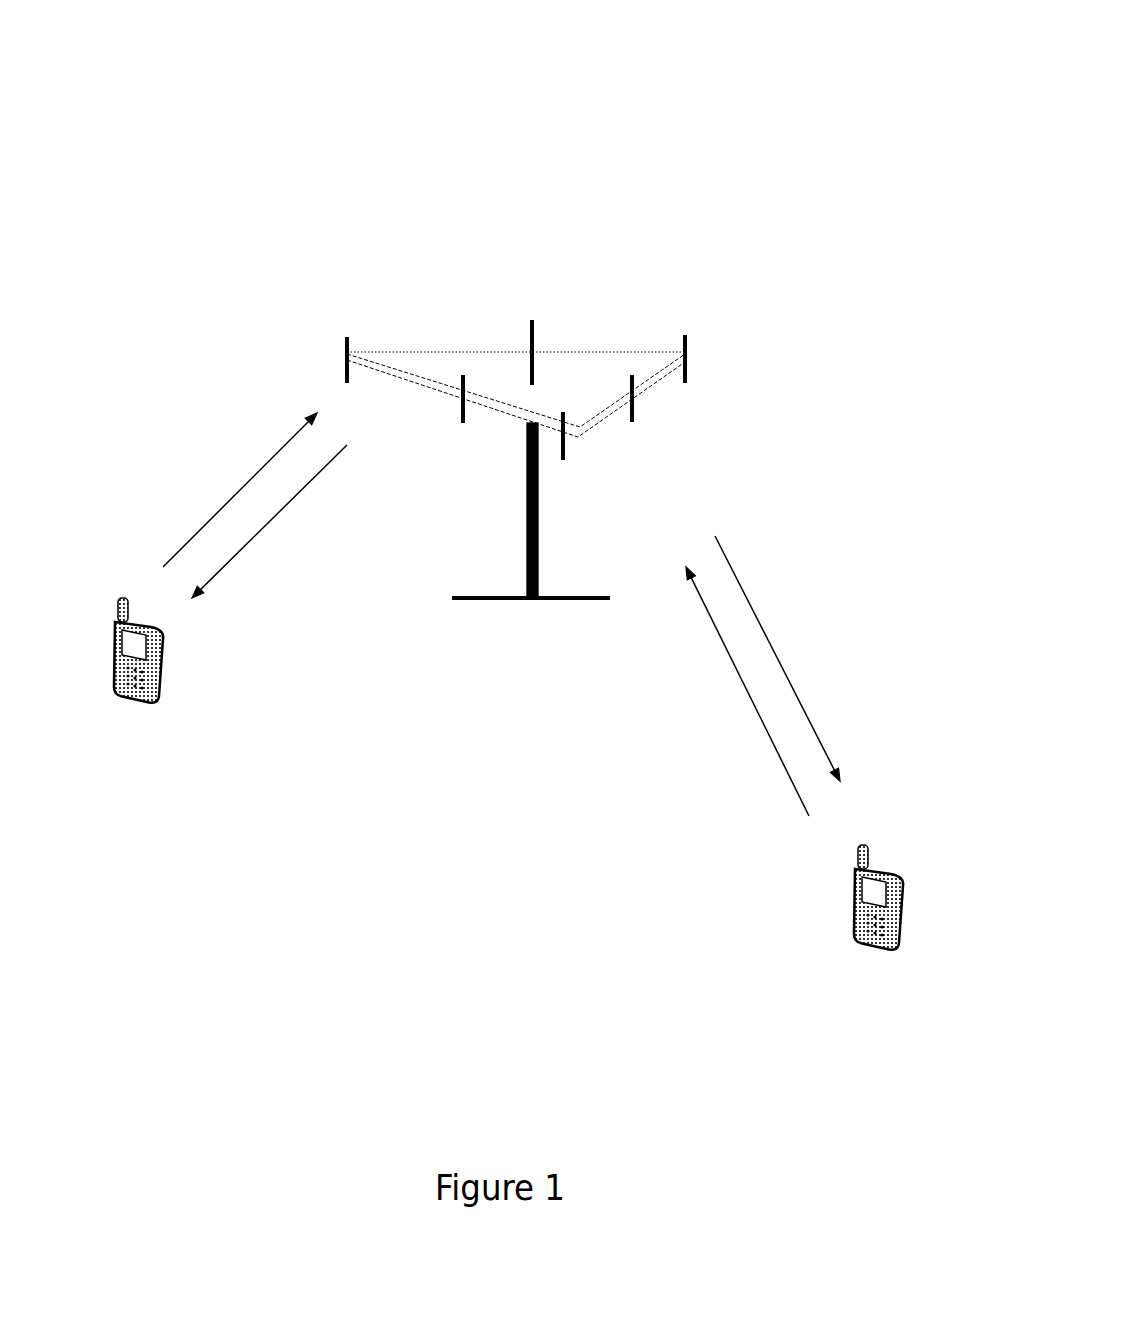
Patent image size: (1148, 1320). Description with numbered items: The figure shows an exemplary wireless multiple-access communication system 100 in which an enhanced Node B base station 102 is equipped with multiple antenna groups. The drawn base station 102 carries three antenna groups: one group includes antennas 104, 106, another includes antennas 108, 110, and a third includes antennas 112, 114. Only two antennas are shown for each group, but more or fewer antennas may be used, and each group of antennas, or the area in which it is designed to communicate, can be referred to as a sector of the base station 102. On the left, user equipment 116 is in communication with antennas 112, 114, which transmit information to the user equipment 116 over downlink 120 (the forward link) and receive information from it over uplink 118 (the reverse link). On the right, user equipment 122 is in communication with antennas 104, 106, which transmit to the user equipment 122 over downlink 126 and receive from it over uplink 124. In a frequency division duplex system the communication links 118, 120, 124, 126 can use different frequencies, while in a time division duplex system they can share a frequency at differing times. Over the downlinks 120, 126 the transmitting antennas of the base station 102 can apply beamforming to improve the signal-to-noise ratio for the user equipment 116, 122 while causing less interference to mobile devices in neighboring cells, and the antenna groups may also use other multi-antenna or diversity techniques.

The wireless multiple-access communication system 100 is at (783, 106).
The enhanced Node B base station 102 is at (506, 545).
The antenna 104 is at (627, 448).
The antenna 106 is at (700, 406).
The antenna 108 is at (749, 359).
The antenna 110 is at (592, 329).
The antenna 112 is at (294, 336).
The antenna 114 is at (413, 430).
The user equipment 116 is at (185, 679).
The uplink 118 is at (221, 490).
The downlink 120 is at (269, 541).
The user equipment 122 is at (831, 922).
The uplink 124 is at (723, 691).
The downlink 126 is at (795, 658).